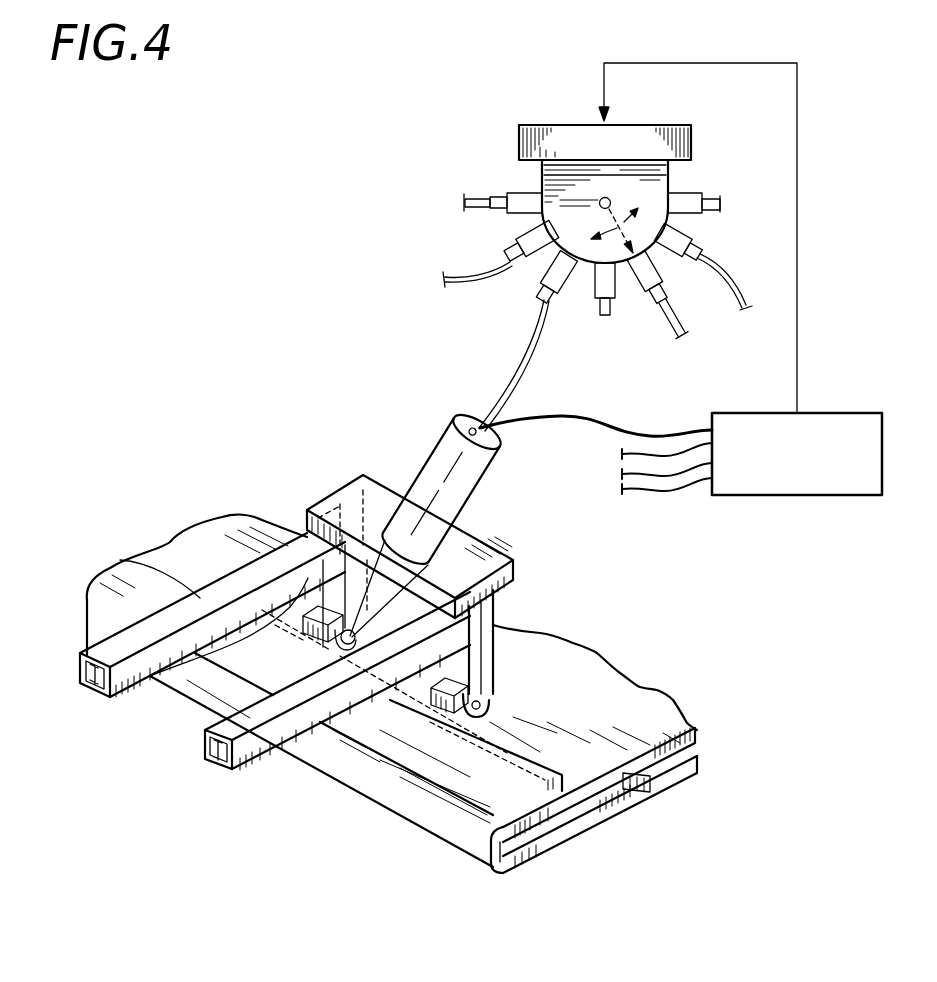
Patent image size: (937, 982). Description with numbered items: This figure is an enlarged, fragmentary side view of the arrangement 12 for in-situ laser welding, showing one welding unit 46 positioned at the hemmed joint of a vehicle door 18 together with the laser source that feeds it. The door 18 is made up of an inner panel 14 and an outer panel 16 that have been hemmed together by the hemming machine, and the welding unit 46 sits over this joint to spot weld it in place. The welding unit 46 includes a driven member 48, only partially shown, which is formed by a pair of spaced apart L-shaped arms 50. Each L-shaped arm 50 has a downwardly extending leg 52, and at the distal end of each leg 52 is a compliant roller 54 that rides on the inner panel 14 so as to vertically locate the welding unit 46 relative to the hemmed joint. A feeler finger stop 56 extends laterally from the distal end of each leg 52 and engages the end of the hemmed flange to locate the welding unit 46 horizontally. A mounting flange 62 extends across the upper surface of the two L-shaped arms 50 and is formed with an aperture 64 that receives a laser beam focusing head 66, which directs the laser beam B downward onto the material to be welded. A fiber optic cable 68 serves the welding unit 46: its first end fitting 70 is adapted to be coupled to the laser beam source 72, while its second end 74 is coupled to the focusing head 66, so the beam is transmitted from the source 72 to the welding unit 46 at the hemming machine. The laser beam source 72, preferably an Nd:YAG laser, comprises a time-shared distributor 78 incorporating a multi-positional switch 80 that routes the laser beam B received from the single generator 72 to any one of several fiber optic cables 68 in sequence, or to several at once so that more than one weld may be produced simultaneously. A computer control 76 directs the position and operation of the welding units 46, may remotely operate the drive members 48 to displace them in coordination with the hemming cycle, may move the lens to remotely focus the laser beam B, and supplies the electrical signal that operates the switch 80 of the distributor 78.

The arrangement for in-situ laser welding 12 is at (296, 283).
The inner panel 14 is at (667, 693).
The outer panel 16 is at (558, 850).
The vehicle door 18 is at (647, 823).
The welding unit 46 is at (222, 436).
The driven member 48 is at (118, 606).
The L-shaped arms 50 is at (193, 582).
The downwardly extending leg 52 is at (493, 660).
The compliant roller 54 is at (490, 707).
The feeler finger stop 56 is at (440, 700).
The mounting flange 62 is at (493, 562).
The aperture 64 is at (392, 535).
The laser beam focusing head 66 is at (431, 458).
The fiber optic cable 68 is at (523, 360).
The first end fitting 70 is at (690, 193).
The laser beam source 72 is at (510, 175).
The second end 74 is at (474, 415).
The computer control 76 is at (797, 495).
The time-shared distributor 78 is at (587, 175).
The multi-positional switch 80 is at (623, 193).
The laser beam B is at (307, 588).